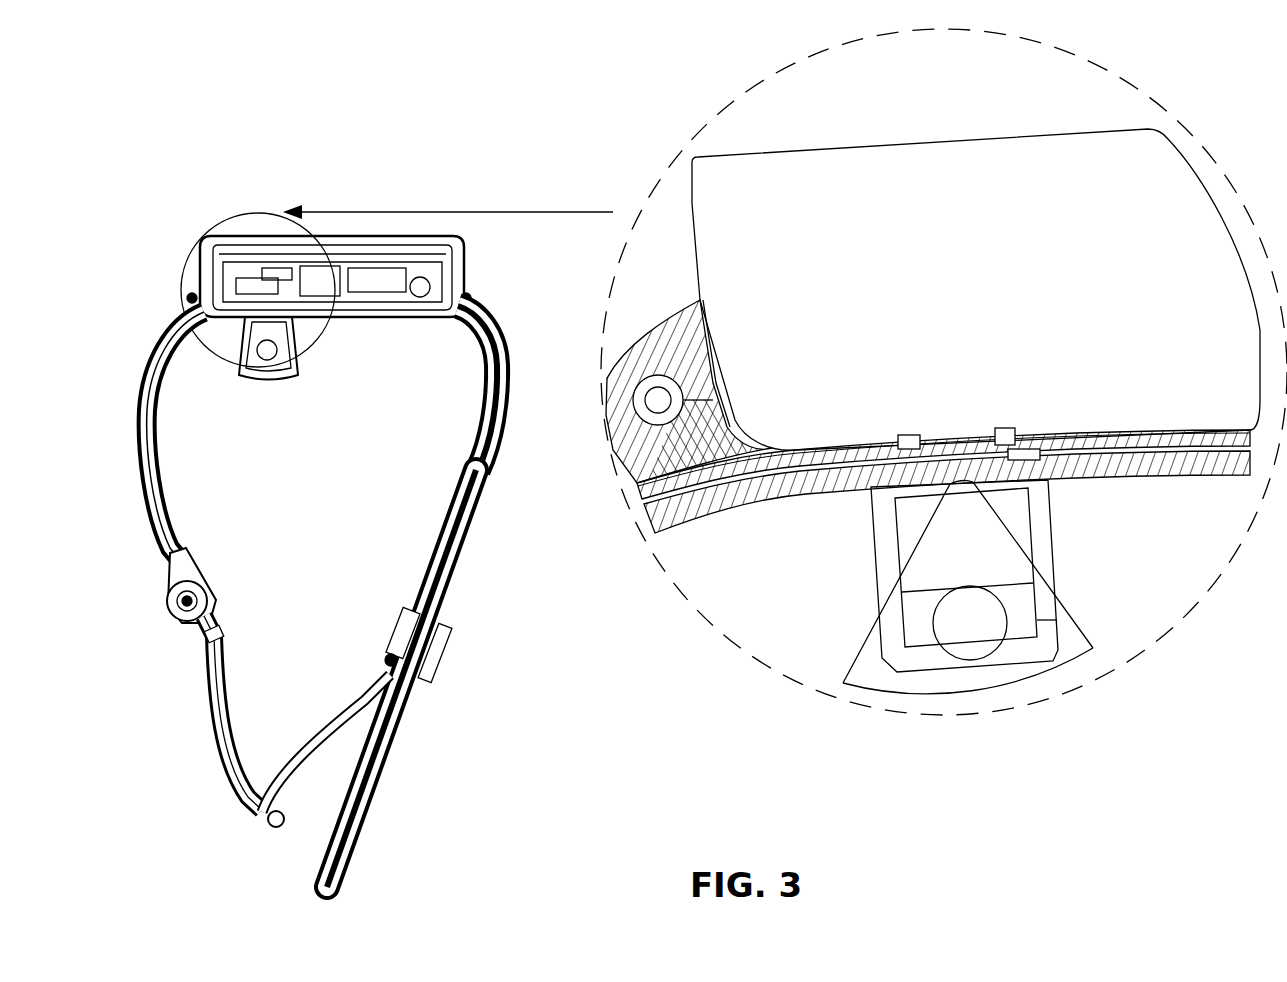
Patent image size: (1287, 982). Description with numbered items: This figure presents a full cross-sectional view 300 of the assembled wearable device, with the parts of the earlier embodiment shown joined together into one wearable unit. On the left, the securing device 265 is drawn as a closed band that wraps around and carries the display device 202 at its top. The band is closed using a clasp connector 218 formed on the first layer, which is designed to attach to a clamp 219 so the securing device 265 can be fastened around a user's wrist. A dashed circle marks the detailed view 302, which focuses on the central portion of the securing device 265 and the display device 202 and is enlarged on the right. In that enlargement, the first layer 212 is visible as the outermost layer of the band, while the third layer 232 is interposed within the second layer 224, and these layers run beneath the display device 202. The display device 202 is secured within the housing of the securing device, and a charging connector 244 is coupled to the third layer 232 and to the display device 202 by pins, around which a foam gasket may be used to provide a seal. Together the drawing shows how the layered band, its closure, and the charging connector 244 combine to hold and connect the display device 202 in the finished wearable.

The full cross-sectional view 300 is at (190, 190).
The securing device 265 is at (132, 373).
The clasp connector 218 is at (243, 625).
The clamp 219 is at (258, 805).
The detailed view 302 is at (700, 118).
The display device 202 is at (976, 289).
The first layer 212 is at (644, 440).
The second layer 224 is at (634, 505).
The third layer 232 is at (790, 484).
The charging connector 244 is at (1062, 558).